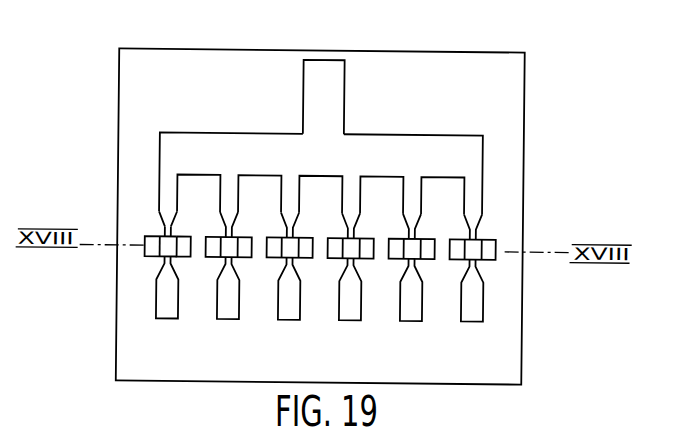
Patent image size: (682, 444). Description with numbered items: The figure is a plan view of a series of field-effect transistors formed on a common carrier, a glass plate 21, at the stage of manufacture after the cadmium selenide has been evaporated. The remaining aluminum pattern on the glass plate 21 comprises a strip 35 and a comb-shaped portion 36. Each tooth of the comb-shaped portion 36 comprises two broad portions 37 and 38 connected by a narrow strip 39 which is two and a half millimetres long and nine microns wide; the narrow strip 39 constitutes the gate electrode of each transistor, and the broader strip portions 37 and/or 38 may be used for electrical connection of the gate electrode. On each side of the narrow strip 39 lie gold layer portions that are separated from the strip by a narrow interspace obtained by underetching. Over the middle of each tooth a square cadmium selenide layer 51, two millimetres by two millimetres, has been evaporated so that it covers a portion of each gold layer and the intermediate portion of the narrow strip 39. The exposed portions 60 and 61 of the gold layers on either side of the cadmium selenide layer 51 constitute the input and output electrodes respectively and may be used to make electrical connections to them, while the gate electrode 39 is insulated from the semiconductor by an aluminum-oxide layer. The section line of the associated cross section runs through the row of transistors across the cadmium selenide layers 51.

The glass plate 21 is at (145, 89).
The strip 35 is at (323, 72).
The comb-shaped portion 36 is at (199, 150).
The broad portion 37 is at (168, 197).
The narrow strip 39 is at (167, 233).
The gold layer 60 is at (168, 245).
The cadmium selenide layer 51 is at (160, 258).
The gold layer 61 is at (183, 248).
The broad portion 38 is at (163, 294).